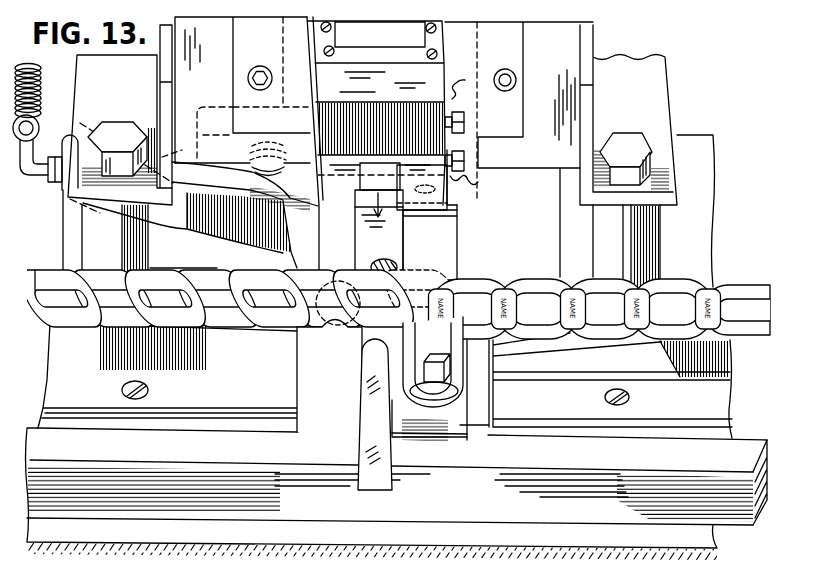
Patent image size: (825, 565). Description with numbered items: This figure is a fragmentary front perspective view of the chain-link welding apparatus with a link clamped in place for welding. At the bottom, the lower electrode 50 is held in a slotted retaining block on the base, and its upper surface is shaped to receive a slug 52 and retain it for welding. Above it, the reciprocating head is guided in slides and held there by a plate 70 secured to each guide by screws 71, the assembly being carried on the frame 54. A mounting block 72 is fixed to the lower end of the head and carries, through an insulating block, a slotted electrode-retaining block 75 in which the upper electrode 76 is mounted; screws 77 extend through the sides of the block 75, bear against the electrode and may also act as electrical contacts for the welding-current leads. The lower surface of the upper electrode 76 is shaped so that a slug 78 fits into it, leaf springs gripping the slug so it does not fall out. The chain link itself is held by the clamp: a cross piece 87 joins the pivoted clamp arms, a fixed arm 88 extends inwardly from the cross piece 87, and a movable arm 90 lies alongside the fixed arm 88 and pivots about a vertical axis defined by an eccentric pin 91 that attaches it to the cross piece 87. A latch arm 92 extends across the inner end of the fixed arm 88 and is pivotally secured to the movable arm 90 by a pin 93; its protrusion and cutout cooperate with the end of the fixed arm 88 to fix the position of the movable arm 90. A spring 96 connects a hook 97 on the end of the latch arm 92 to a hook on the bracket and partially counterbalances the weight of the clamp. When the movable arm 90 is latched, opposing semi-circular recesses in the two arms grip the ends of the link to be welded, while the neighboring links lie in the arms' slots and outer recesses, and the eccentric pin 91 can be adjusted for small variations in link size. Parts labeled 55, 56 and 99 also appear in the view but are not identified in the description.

The lower electrode 50 is at (380, 360).
The slug 52 is at (378, 348).
The frame 54 is at (576, 42).
The clamping nut 55 is at (640, 142).
The guide member 56 is at (659, 245).
The plate 70 is at (519, 111).
The screws 71 is at (516, 80).
The mounting block 72 is at (437, 77).
The slotted electrode-retaining block 75 is at (433, 206).
The upper electrode 76 is at (380, 118).
The screws 77 is at (464, 121).
The slug 78 is at (395, 264).
The cross piece 87 is at (540, 513).
The fixed arm 88 is at (305, 359).
The movable arm 90 is at (457, 257).
The eccentric pin 91 is at (456, 376).
The latch arm 92 is at (232, 248).
The pin 93 is at (460, 189).
The spring 96 is at (34, 80).
The hook 97 is at (42, 139).
The housing 99 is at (218, 118).